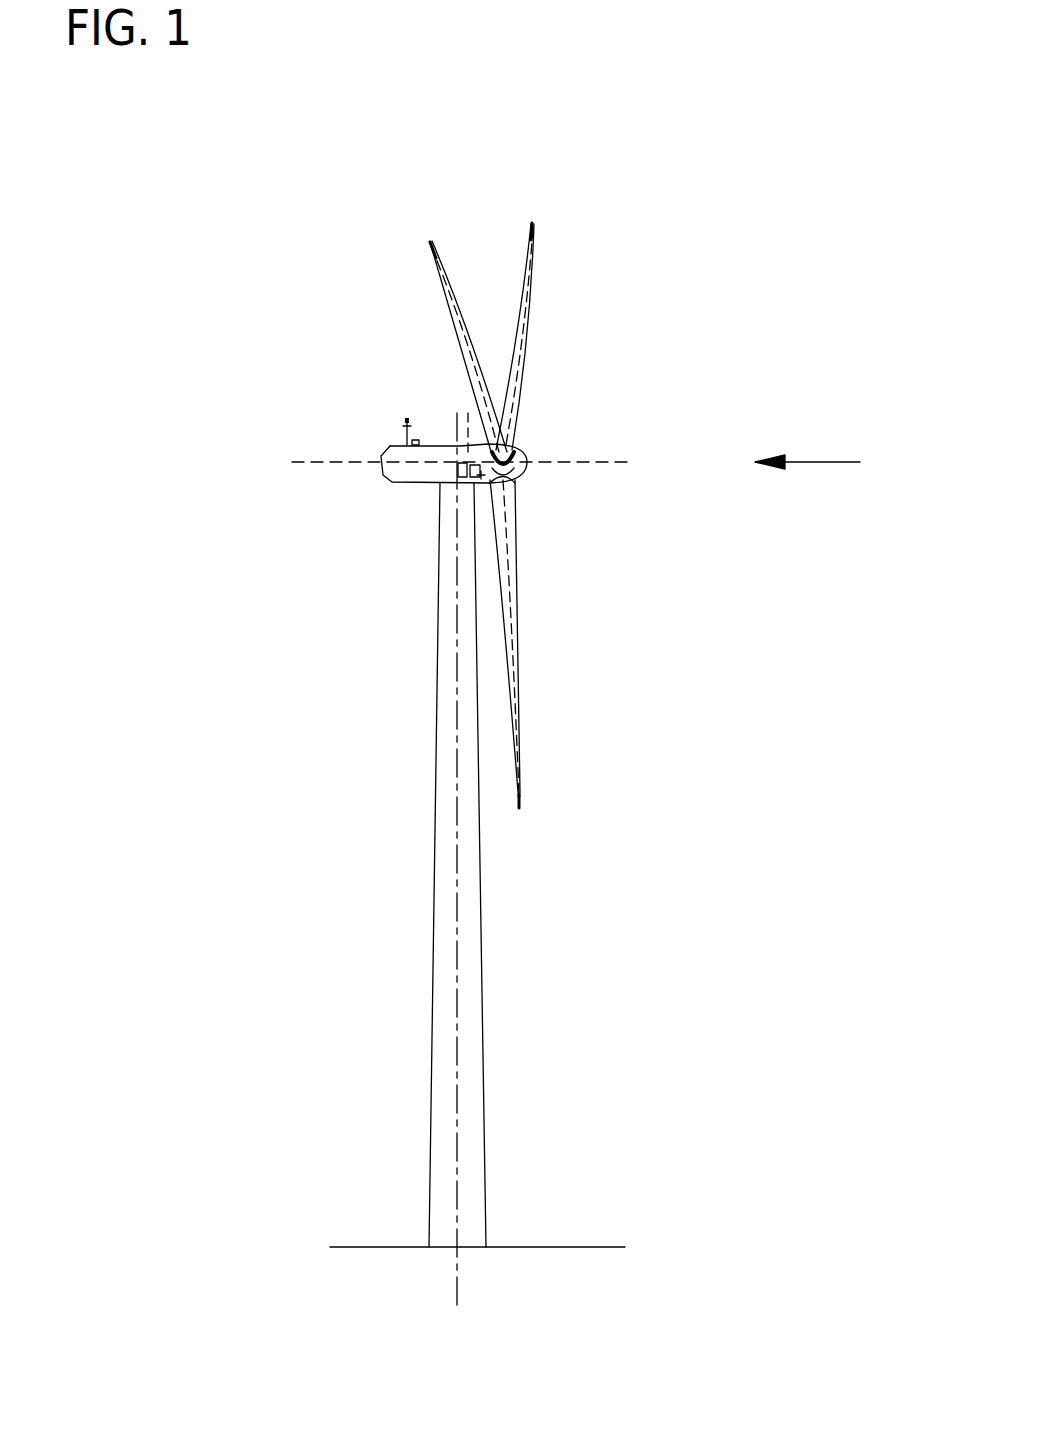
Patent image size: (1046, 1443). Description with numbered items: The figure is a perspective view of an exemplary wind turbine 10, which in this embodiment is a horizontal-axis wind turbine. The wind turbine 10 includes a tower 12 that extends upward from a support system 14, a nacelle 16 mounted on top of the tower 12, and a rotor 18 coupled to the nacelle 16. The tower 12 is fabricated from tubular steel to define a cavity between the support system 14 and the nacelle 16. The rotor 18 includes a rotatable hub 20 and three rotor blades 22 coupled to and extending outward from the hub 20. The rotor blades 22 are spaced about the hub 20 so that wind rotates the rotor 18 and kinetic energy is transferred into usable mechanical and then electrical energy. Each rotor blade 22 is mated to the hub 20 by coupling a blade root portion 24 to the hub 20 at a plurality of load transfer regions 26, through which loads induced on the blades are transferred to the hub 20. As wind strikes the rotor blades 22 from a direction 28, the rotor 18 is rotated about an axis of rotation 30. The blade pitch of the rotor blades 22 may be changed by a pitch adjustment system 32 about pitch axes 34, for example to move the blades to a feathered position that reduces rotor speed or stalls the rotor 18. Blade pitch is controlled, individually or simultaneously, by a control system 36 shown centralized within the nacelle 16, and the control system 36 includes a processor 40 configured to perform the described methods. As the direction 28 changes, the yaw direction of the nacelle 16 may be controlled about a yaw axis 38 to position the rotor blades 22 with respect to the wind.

The wind turbine 10 is at (218, 256).
The tower 12 is at (432, 1018).
The support system 14 is at (387, 1247).
The nacelle 16 is at (420, 462).
The rotor 18 is at (532, 367).
The hub 20 is at (522, 458).
The rotor blade 22 is at (452, 312).
The blade root portion 24 is at (544, 634).
The load transfer regions 26 is at (507, 484).
The direction 28 is at (828, 462).
The axis of rotation 30 is at (590, 462).
The pitch adjustment system 32 is at (500, 512).
The pitch axes 34 is at (422, 248).
The control system 36 is at (463, 485).
The yaw axis 38 is at (457, 904).
The processor 40 is at (468, 413).